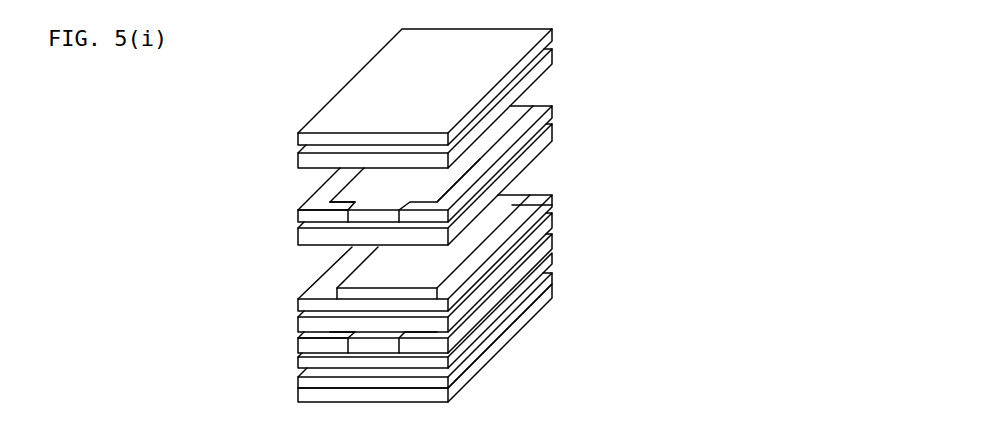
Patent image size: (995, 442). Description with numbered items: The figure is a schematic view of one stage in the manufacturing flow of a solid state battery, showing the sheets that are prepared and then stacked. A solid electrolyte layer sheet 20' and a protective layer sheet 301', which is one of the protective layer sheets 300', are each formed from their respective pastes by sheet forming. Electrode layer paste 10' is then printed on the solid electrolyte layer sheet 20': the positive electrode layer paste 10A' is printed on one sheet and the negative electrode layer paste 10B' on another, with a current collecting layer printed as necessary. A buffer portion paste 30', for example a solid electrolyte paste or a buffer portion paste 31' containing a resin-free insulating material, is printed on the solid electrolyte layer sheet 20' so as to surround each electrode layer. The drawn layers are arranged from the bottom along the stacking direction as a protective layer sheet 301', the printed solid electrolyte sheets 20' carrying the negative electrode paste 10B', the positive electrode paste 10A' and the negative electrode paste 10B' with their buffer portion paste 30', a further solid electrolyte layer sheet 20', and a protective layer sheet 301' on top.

The protective layer sheet 300' is at (448, 219).
The protective layer sheet 301' is at (476, 205).
The solid electrolyte layer sheet 20' is at (422, 228).
The buffer portion paste 30' is at (494, 240).
The buffer portion paste containing resin-free insulating material 31' is at (494, 164).
The electrode layer paste 10' is at (368, 312).
The positive electrode layer paste 10A' is at (547, 203).
The negative electrode layer paste 10B' is at (278, 290).